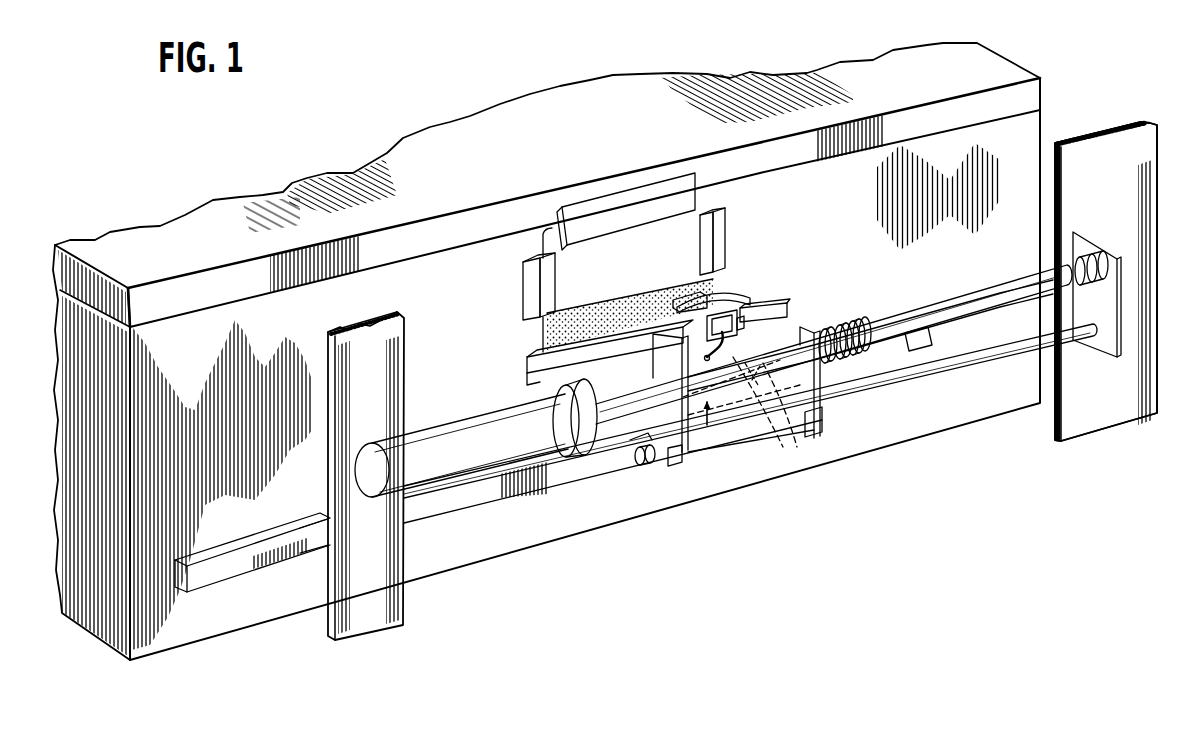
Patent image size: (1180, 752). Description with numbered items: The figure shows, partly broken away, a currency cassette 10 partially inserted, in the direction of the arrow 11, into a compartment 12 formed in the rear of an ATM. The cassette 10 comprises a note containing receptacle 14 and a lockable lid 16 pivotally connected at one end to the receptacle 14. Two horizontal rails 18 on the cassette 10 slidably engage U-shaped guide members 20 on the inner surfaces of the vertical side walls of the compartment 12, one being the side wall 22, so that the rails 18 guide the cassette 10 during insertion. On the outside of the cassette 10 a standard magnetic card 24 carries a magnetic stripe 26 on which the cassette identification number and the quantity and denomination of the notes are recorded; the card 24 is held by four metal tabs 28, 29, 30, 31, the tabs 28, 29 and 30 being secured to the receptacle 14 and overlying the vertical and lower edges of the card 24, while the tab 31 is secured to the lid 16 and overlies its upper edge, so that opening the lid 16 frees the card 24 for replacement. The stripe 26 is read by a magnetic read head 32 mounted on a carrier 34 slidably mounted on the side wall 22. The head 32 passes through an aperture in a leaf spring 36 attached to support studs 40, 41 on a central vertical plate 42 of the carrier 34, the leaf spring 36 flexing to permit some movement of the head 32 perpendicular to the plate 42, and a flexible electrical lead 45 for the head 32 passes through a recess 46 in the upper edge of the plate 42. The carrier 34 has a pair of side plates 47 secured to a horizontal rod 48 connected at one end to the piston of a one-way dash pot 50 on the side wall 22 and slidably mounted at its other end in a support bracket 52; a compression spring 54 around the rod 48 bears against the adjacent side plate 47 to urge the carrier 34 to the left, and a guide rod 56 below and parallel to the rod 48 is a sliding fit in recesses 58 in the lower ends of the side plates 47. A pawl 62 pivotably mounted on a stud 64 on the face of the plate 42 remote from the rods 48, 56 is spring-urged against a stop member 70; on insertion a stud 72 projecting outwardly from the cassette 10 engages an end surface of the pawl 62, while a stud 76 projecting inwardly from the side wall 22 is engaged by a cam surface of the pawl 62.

The cassette 10 is at (212, 190).
The arrow 11 is at (575, 158).
The compartment 12 is at (1102, 120).
The note containing receptacle 14 is at (262, 613).
The lockable lid 16 is at (397, 158).
The rails 18 is at (236, 545).
The guide members 20 is at (330, 518).
The side wall 22 is at (370, 622).
The magnetic card 24 is at (712, 199).
The magnetic stripe 26 is at (548, 333).
The tab 28 is at (523, 285).
The tab 29 is at (697, 240).
The tab 30 is at (527, 362).
The tab 31 is at (607, 228).
The magnetic read head 32 is at (697, 300).
The carrier 34 is at (798, 298).
The leaf spring 36 is at (733, 297).
The support stud 40 is at (690, 325).
The support stud 41 is at (752, 305).
The central vertical plate 42 is at (723, 372).
The flexible electrical lead 45 is at (655, 372).
The recess 46 is at (790, 310).
The side plates 47 is at (683, 440).
The rod 48 is at (748, 372).
The one-way dash pot 50 is at (467, 420).
The support bracket 52 is at (1088, 232).
The compression spring 54 is at (852, 318).
The guide rod 56 is at (922, 372).
The recesses 58 is at (668, 447).
The pawl 62 is at (707, 428).
The stud 64 is at (812, 427).
The stop member 70 is at (775, 412).
The stud 72 is at (622, 437).
The stud 76 is at (922, 345).